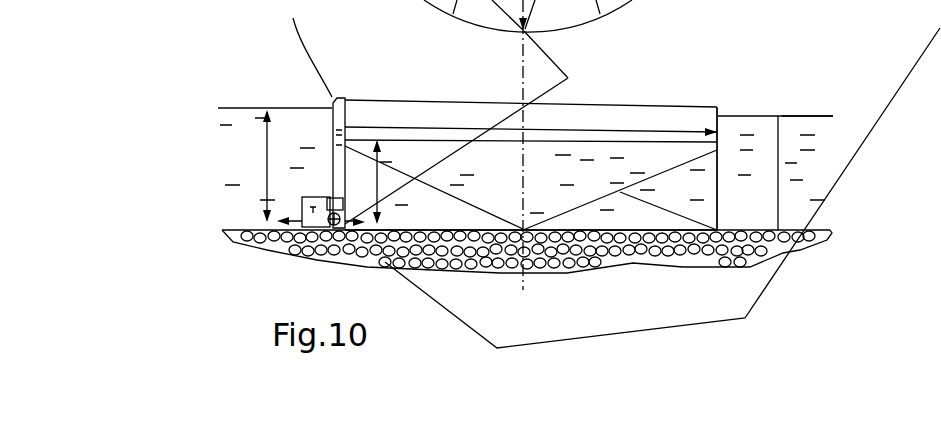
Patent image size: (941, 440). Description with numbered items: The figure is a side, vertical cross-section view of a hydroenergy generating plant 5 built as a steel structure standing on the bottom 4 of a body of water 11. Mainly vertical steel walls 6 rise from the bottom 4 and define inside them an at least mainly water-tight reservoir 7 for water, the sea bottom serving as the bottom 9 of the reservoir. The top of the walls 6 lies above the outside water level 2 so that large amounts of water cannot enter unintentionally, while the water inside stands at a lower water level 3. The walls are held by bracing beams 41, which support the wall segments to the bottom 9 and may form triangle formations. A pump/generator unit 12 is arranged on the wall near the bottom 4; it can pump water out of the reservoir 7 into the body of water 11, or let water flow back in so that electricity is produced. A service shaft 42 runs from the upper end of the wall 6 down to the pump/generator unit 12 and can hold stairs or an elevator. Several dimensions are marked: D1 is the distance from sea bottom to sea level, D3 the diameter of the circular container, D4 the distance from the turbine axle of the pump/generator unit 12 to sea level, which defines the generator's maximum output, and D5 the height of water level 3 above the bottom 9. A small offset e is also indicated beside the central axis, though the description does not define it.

The water level 2 is at (232, 110).
The water level in the reservoir 3 is at (593, 142).
The bottom of the body of water 4 is at (805, 233).
The hydroenergy generating plant 5 is at (325, 57).
The wall 6 is at (717, 198).
The reservoir 7 is at (542, 184).
The bottom of the reservoir 9 is at (570, 231).
The body of water 11 is at (825, 180).
The pump/generator unit 12 is at (294, 198).
The bracing beam 41 is at (568, 78).
The service shaft 42 is at (347, 111).
The distance from sea bottom to sea level D1 is at (782, 140).
The diameter of the circular container D3 is at (700, 130).
The distance from the turbine axle to sea level D4 is at (267, 131).
The height of water level in the reservoir D5 is at (408, 155).
The offset e is at (511, 145).